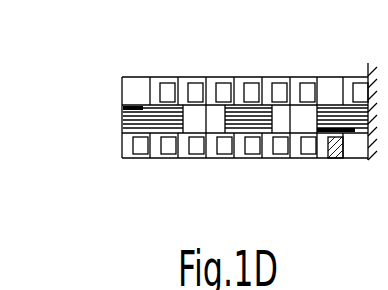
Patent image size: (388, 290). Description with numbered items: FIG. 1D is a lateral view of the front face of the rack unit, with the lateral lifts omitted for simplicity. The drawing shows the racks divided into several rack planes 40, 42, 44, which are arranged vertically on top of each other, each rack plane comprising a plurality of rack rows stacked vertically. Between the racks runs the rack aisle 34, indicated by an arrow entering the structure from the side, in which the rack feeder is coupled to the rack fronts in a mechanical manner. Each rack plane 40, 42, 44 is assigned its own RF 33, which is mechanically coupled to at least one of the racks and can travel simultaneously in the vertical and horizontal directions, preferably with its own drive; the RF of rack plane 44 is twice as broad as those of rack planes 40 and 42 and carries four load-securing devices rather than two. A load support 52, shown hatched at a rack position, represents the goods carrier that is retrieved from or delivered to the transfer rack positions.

The RF 33 is at (224, 113).
The rack aisle 34 is at (114, 120).
The rack plane 40 is at (123, 70).
The rack plane 42 is at (207, 70).
The rack plane 44 is at (292, 70).
The load support 52 is at (331, 156).